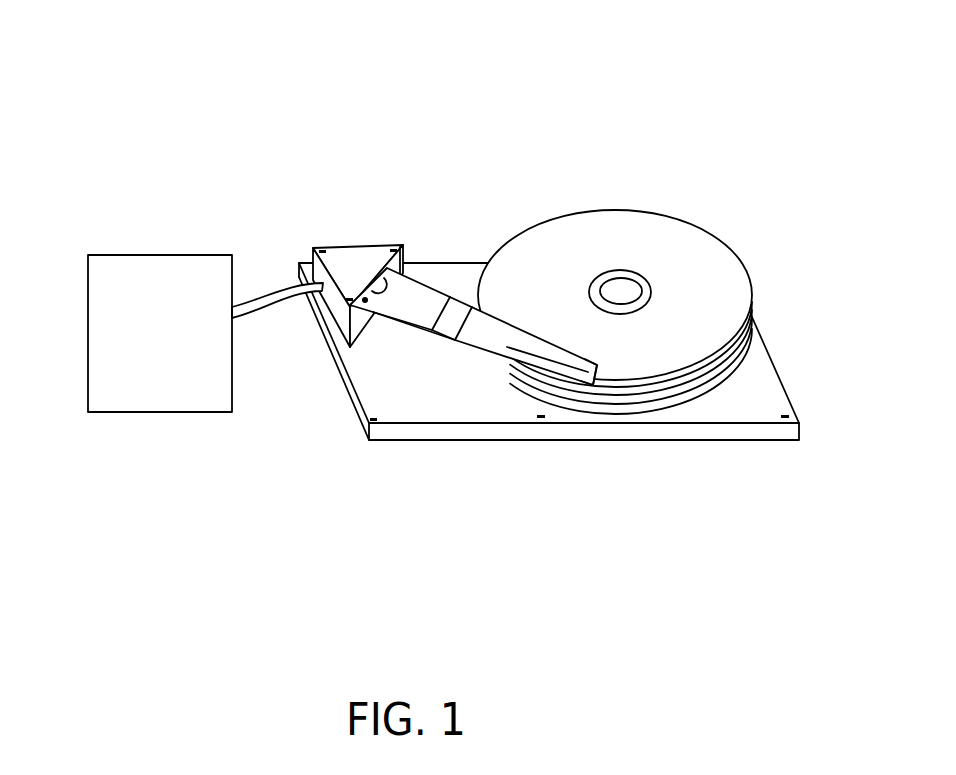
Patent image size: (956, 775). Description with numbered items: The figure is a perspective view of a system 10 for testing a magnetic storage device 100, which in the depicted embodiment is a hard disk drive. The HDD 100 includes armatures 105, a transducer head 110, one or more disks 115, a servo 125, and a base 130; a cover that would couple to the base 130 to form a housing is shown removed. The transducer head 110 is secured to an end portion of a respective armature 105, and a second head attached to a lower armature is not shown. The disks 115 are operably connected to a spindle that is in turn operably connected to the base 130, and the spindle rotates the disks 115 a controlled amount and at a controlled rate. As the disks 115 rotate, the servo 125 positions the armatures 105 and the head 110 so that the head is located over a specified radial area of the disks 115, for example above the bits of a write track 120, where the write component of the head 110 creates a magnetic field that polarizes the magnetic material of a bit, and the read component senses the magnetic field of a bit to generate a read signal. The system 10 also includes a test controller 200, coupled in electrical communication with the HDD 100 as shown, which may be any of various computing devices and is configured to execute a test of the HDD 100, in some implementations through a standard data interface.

The system 10 is at (447, 278).
The magnetic storage device 100 is at (497, 295).
The armature 105 is at (472, 308).
The transducer head 110 is at (593, 385).
The disk 115 is at (753, 298).
The write track 120 is at (640, 278).
The servo 125 is at (340, 247).
The base 130 is at (357, 415).
The test controller 200 is at (179, 372).